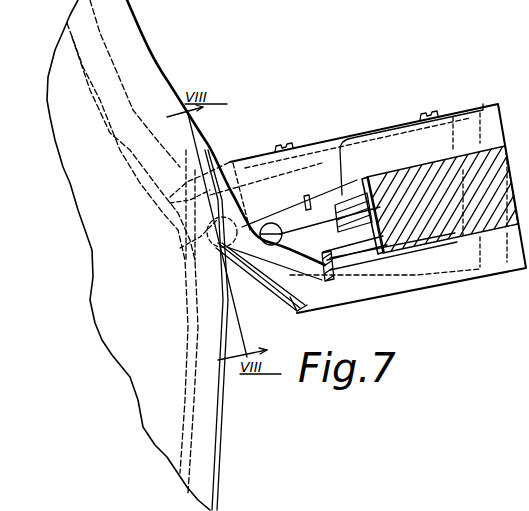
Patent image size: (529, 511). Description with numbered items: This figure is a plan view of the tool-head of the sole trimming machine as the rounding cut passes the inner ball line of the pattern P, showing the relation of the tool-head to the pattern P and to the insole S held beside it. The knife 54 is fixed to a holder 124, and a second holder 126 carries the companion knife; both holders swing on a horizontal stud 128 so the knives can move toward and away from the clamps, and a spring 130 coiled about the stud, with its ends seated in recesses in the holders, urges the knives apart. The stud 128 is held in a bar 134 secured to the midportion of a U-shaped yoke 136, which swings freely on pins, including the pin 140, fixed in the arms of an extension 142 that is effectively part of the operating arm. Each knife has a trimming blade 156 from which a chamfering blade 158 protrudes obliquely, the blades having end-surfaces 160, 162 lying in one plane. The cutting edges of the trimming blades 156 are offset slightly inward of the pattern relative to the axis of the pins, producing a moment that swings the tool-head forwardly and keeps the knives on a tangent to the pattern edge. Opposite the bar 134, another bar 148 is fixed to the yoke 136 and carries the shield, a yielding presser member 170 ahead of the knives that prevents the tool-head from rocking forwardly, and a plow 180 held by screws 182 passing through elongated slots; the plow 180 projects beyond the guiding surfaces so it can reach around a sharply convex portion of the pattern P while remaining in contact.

The pattern P is at (118, 74).
The insole S is at (168, 78).
The knife 54 is at (261, 226).
The holder 124 is at (299, 225).
The holder 126 is at (352, 248).
The horizontal stud 128 is at (357, 228).
The spring 130 is at (352, 210).
The bar 134 is at (390, 282).
The U-shaped yoke 136 is at (453, 247).
The pin 140 is at (208, 231).
The extension 142 is at (417, 275).
The bar 148 is at (385, 145).
The trimming blade 156 is at (218, 239).
The chamfering blade 158 is at (216, 250).
The end-surface 160 is at (281, 266).
The end-surface 162 is at (217, 254).
The presser member 170 is at (228, 162).
The plow 180 is at (203, 166).
The screws 182 is at (288, 142).